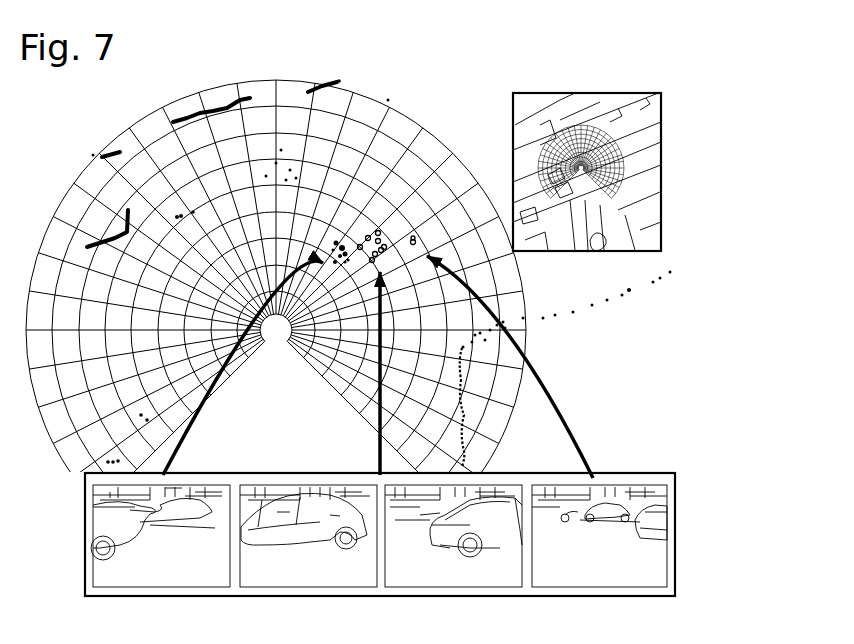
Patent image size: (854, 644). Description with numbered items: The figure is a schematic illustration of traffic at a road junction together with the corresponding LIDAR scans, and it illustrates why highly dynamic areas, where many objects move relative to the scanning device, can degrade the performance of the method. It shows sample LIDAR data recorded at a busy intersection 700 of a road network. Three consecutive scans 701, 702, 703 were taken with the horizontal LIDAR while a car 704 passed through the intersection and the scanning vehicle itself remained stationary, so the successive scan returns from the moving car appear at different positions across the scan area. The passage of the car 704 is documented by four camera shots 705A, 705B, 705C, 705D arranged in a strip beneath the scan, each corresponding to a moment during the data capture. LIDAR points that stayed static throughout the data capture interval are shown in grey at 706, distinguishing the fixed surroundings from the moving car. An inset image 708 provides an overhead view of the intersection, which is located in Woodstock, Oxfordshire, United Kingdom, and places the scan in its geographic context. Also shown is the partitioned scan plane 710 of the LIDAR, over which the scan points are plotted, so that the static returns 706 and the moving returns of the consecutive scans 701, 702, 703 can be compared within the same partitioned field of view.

The busy intersection 700 is at (622, 152).
The first consecutive scan 701 is at (340, 238).
The second consecutive scan 702 is at (387, 228).
The third consecutive scan 703 is at (422, 235).
The car 704 is at (276, 522).
The camera shot 705A is at (186, 623).
The camera shot 705B is at (331, 623).
The camera shot 705C is at (478, 623).
The camera shot 705D is at (624, 623).
The static LIDAR points 706 is at (174, 208).
The inset image 708 is at (665, 228).
The partitioned scan plane 710 is at (527, 340).